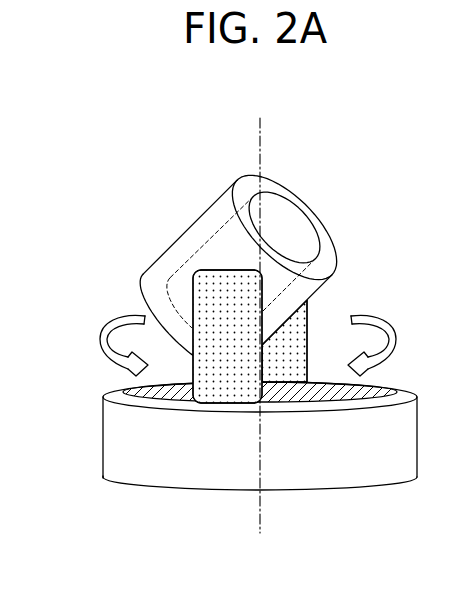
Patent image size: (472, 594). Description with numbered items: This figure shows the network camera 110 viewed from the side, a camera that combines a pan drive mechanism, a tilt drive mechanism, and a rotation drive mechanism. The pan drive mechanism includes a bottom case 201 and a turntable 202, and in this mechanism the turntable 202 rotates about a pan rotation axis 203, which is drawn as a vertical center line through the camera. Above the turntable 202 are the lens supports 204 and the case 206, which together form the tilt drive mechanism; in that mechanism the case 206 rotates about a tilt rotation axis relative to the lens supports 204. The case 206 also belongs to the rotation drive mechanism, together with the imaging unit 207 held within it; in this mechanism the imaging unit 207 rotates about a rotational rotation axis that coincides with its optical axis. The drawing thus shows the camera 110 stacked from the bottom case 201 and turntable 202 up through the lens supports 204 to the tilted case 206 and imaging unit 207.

The network camera 110 is at (175, 490).
The bottom case 201 is at (110, 437).
The turntable 202 is at (317, 402).
The pan rotation axis 203 is at (263, 133).
The lens supports 204 is at (310, 322).
The case 206 is at (195, 217).
The imaging unit 207 is at (293, 225).